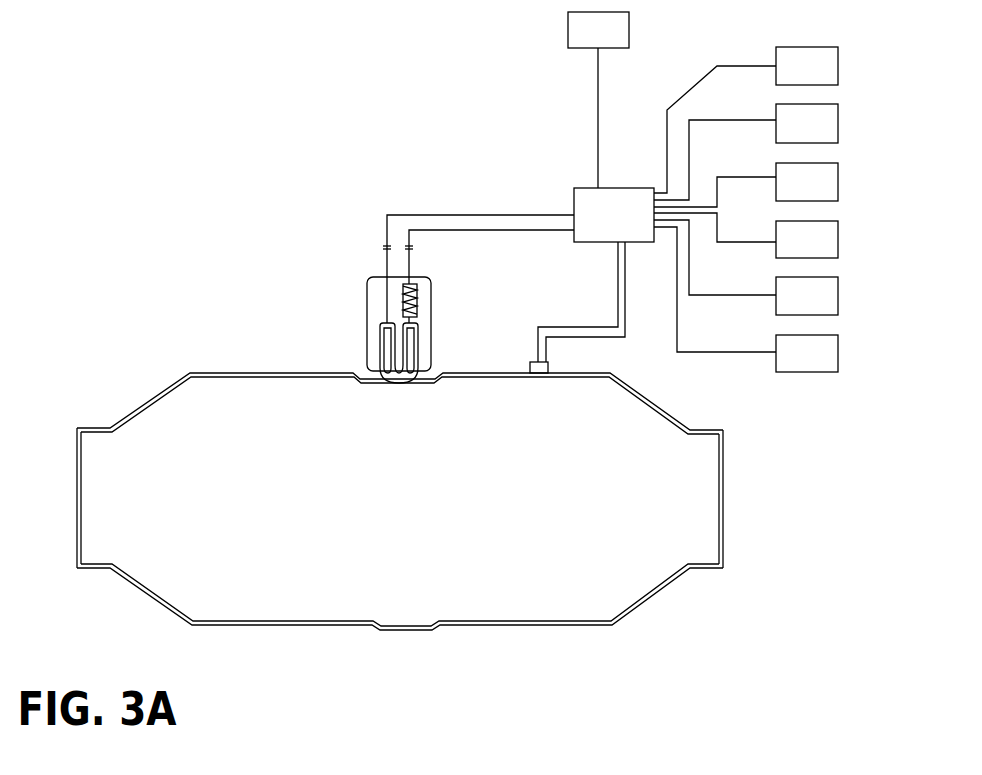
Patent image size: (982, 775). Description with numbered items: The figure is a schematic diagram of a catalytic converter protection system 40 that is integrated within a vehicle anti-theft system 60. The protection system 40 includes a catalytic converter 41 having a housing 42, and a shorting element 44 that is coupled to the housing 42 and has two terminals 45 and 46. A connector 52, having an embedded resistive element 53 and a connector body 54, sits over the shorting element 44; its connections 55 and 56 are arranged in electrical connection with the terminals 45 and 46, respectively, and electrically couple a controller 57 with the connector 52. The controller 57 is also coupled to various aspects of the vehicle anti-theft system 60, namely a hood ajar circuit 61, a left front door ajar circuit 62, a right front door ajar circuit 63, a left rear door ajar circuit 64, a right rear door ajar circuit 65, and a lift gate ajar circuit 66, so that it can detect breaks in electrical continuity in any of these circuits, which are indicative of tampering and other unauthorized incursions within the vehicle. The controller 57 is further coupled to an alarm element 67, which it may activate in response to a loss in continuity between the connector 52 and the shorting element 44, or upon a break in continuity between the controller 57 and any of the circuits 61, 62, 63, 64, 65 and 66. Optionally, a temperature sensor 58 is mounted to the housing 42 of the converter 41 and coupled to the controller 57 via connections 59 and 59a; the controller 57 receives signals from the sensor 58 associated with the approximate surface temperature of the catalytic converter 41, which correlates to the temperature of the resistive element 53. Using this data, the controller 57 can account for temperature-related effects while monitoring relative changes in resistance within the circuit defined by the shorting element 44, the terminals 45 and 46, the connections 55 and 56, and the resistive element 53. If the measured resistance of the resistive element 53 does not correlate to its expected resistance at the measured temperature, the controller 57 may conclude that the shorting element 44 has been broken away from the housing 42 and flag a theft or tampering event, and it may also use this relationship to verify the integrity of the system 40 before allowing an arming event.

The catalytic converter protection system 40 is at (400, 433).
The catalytic converter 41 is at (150, 390).
The housing 42 is at (217, 372).
The shorting element 44 is at (395, 374).
The terminal 45 is at (382, 340).
The terminal 46 is at (418, 345).
The connector 52 is at (387, 317).
The resistive element 53 is at (418, 298).
The connector body 54 is at (380, 277).
The connection 55 is at (387, 222).
The connection 56 is at (453, 232).
The controller 57 is at (614, 215).
The temperature sensor 58 is at (532, 361).
The connection 59 is at (582, 325).
The connection 59a is at (585, 340).
The vehicle anti-theft system 60 is at (669, 192).
The hood ajar circuit 61 is at (746, 120).
The left front door ajar circuit 62 is at (746, 152).
The right front door ajar circuit 63 is at (746, 185).
The left rear door ajar circuit 64 is at (746, 235).
The right rear door ajar circuit 65 is at (746, 267).
The lift gate ajar circuit 66 is at (746, 299).
The alarm element 67 is at (598, 100).